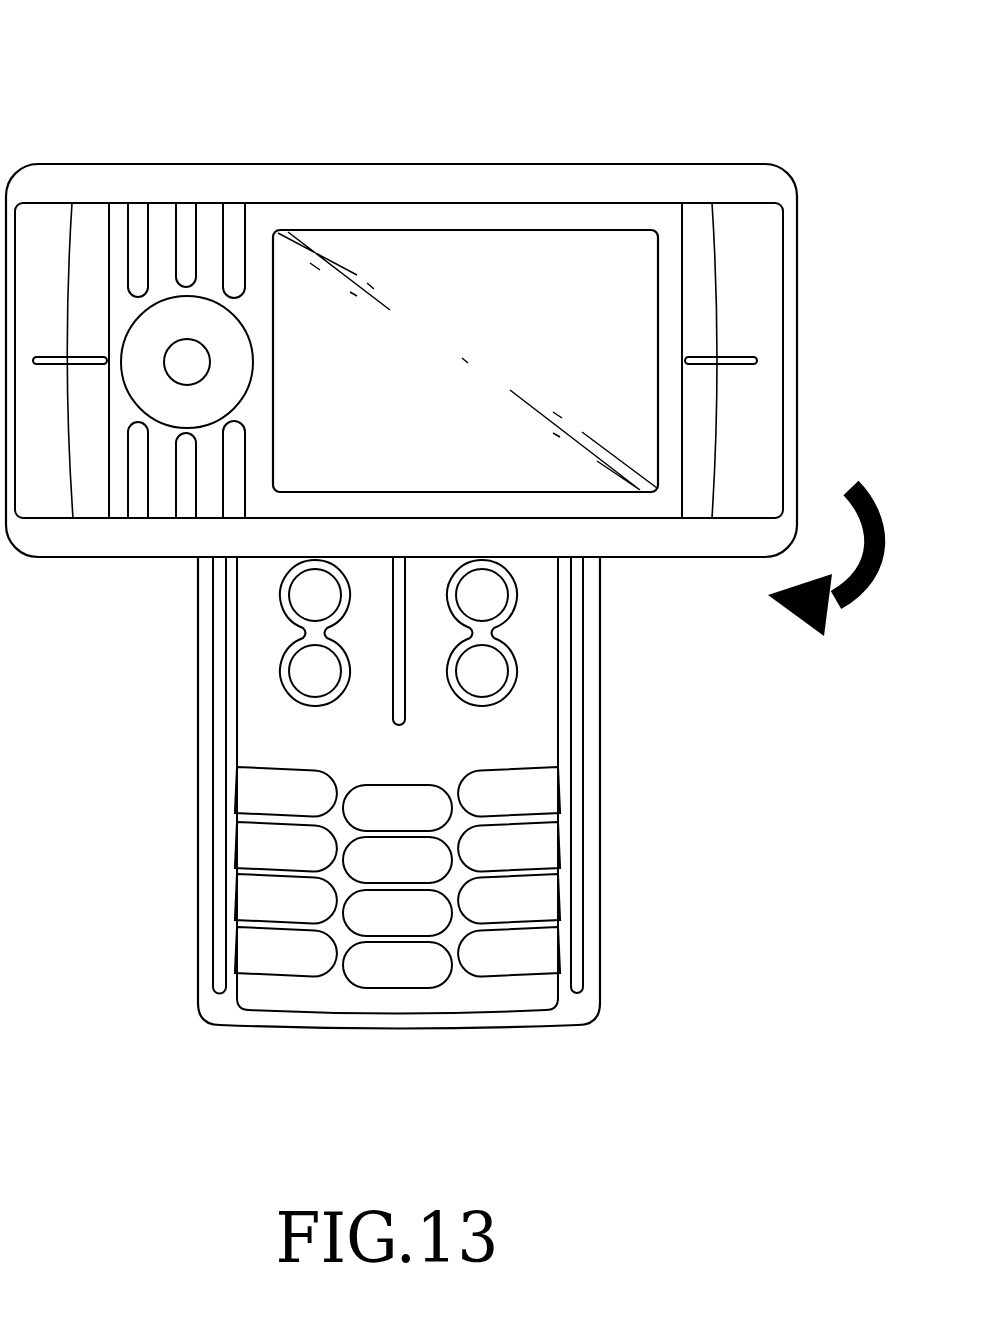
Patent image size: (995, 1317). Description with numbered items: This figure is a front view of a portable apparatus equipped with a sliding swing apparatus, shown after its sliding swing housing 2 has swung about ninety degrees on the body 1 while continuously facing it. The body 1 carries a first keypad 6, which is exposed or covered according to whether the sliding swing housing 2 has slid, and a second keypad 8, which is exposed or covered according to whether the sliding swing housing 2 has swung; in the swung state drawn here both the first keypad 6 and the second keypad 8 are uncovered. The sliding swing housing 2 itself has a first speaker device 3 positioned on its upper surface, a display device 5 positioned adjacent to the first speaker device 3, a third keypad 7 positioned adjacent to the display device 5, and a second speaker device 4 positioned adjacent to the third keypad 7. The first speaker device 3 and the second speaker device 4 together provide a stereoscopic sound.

The body 1 is at (416, 793).
The sliding swing housing 2 is at (456, 287).
The first speaker device 3 is at (741, 354).
The second speaker device 4 is at (88, 356).
The display device 5 is at (552, 255).
The first keypad 6 is at (253, 940).
The third keypad 7 is at (187, 219).
The second keypad 8 is at (493, 672).